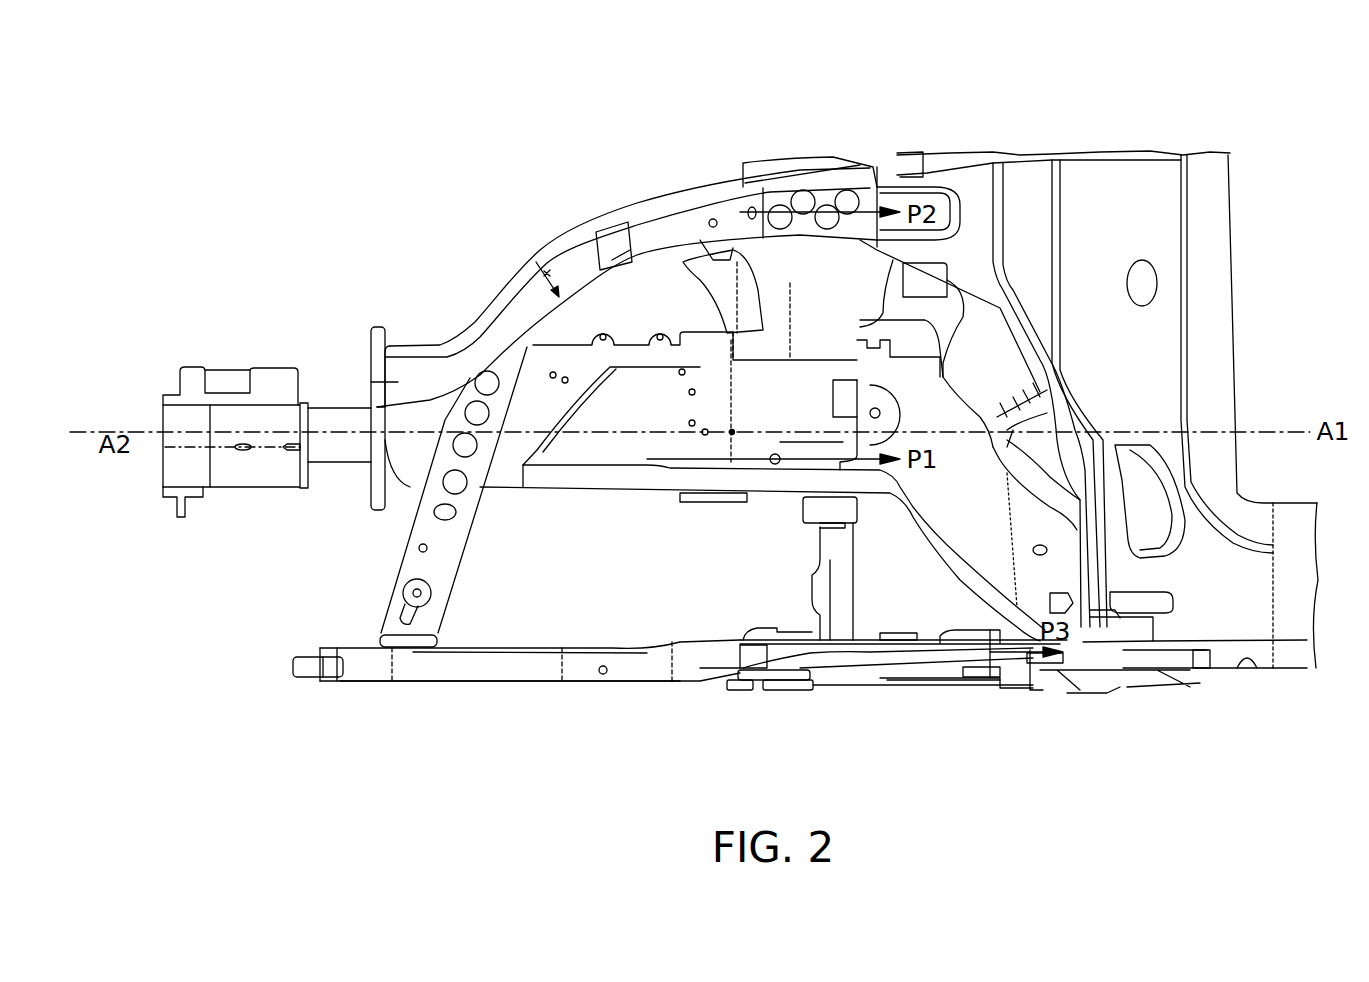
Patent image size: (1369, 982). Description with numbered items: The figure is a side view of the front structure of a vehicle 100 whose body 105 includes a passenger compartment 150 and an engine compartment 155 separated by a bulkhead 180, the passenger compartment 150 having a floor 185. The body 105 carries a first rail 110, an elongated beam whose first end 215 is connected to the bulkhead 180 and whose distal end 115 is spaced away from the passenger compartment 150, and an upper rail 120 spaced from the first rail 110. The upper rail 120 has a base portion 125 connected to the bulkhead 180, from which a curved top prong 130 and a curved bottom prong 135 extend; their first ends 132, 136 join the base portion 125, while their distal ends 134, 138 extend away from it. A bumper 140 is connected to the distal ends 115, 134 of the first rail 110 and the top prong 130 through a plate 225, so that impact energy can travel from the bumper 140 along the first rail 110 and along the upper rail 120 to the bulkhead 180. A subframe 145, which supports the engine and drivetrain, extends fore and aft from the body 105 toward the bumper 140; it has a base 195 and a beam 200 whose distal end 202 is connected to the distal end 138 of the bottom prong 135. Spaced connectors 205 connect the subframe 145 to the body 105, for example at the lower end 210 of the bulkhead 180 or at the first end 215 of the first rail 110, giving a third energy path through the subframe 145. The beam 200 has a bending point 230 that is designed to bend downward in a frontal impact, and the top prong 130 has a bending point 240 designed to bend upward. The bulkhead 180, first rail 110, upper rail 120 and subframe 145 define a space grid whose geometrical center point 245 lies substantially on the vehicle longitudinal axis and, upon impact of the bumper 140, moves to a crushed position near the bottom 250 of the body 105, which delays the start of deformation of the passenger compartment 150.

The vehicle 100 is at (415, 160).
The body 105 is at (999, 138).
The first rail 110 is at (590, 487).
The distal end 115 is at (392, 343).
The upper rail 120 is at (724, 170).
The base portion 125 is at (893, 153).
The top prong 130 is at (555, 288).
The first end 132 is at (923, 157).
The first end 136 is at (915, 211).
The distal end 134 is at (398, 382).
The bottom prong 135 is at (402, 566).
The distal end 138 is at (437, 623).
The bumper 140 is at (150, 414).
The subframe 145 is at (713, 707).
The passenger compartment 150 is at (1302, 278).
The engine compartment 155 is at (641, 142).
The bulkhead 180 is at (1005, 455).
The floor 185 is at (1293, 668).
The base 195 is at (978, 682).
The beam 200 is at (568, 685).
The distal end 202 is at (368, 682).
The connectors 205 is at (813, 510).
The lower end 210 is at (1085, 627).
The first end 215 is at (840, 342).
The plate 225 is at (380, 323).
The bending point 230 is at (603, 687).
The bending point 240 is at (545, 278).
The geometrical center point 245 is at (732, 430).
The bottom 250 is at (430, 692).